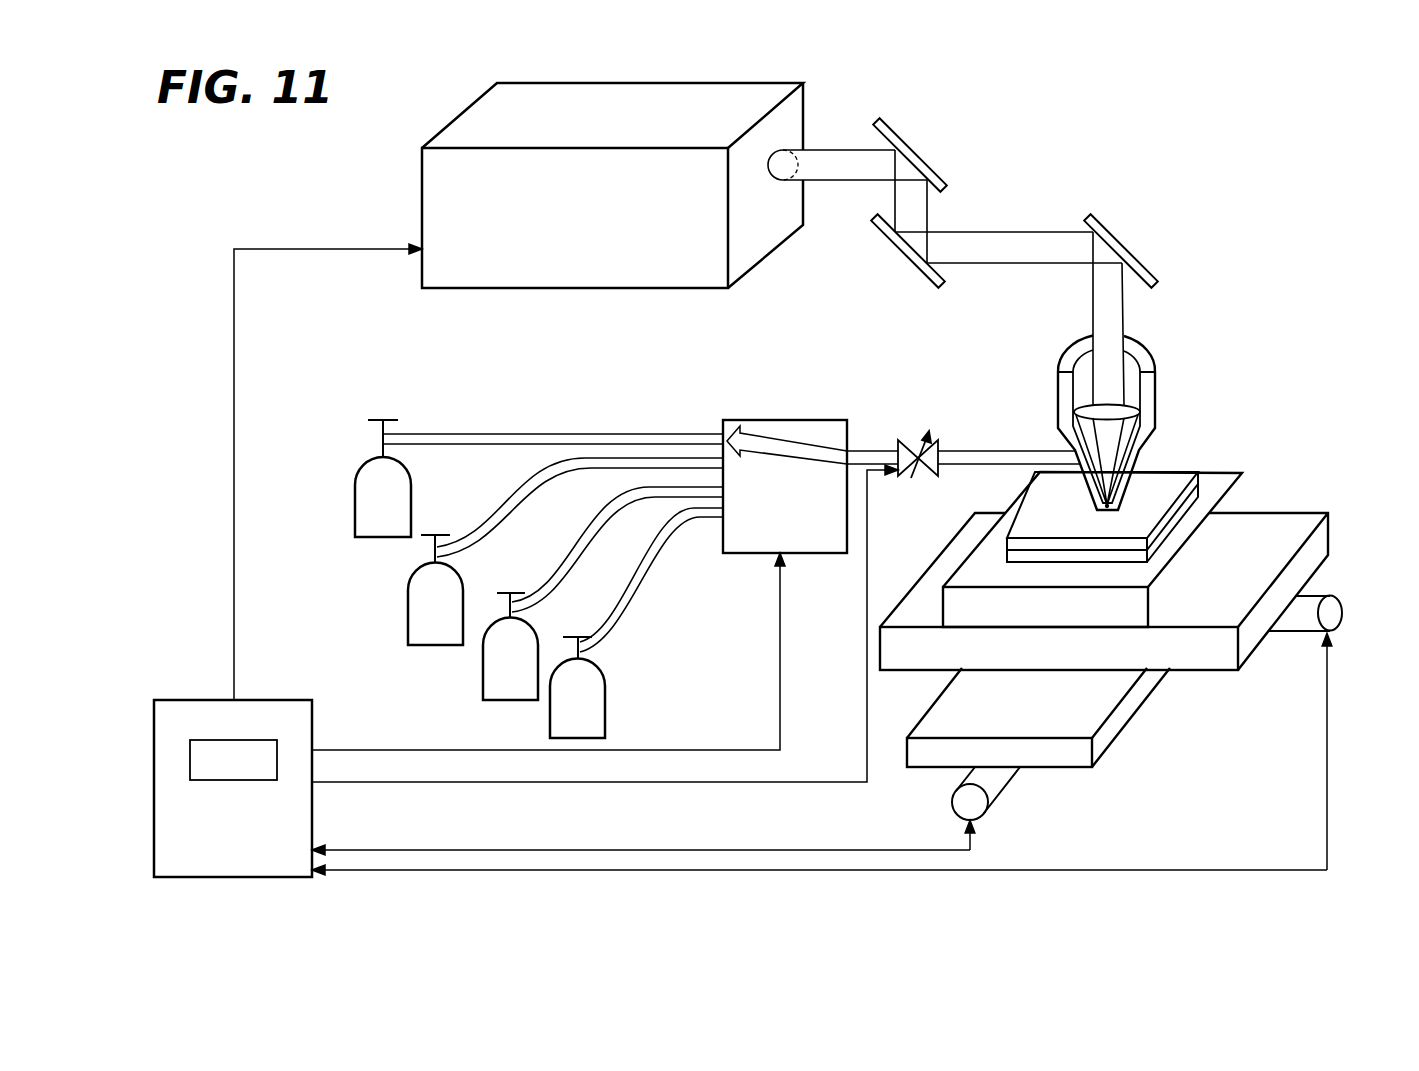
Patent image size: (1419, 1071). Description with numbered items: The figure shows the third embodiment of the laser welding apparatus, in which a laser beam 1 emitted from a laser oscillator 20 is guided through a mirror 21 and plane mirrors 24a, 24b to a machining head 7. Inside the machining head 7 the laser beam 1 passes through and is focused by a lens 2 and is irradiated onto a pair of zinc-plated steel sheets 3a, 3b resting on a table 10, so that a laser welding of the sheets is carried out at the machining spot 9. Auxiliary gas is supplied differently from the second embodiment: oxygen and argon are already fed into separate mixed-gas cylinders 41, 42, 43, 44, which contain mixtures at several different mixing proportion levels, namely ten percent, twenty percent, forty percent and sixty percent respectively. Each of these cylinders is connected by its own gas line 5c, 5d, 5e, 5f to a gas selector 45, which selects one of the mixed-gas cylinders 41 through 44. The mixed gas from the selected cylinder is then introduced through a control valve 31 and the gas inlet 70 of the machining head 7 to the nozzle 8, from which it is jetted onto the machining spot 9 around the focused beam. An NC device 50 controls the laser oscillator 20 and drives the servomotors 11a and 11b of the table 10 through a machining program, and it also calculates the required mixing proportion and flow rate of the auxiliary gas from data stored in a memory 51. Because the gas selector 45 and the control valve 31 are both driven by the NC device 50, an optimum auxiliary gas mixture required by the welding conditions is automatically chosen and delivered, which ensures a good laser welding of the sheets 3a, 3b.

The laser oscillator 20 is at (706, 83).
The laser beam 1 is at (833, 148).
The reflecting mirror 21 is at (892, 124).
The plane mirror 24a is at (890, 243).
The plane mirror 24b is at (1115, 233).
The machining head 7 is at (1155, 390).
The lens 2 is at (1082, 392).
The nozzle 8 is at (1107, 507).
The machining spot 9 is at (1130, 522).
The gas inlet 70 is at (1068, 440).
The control valve 31 is at (917, 440).
The gas selector 45 is at (817, 556).
The gas line 5c is at (507, 433).
The gas line 5d is at (492, 532).
The gas line 5e is at (568, 570).
The gas line 5f is at (617, 620).
The mixed-gas cylinder 41 is at (385, 538).
The mixed-gas cylinder 42 is at (432, 646).
The mixed-gas cylinder 43 is at (508, 701).
The mixed-gas cylinder 44 is at (607, 713).
The NC device 50 is at (200, 698).
The memory 51 is at (244, 740).
The table 10 is at (1197, 552).
The zinc-plated steel sheet 3a is at (1187, 468).
The zinc-plated steel sheet 3b is at (1185, 518).
The servomotor 11a is at (1007, 785).
The servomotor 11b is at (1303, 638).